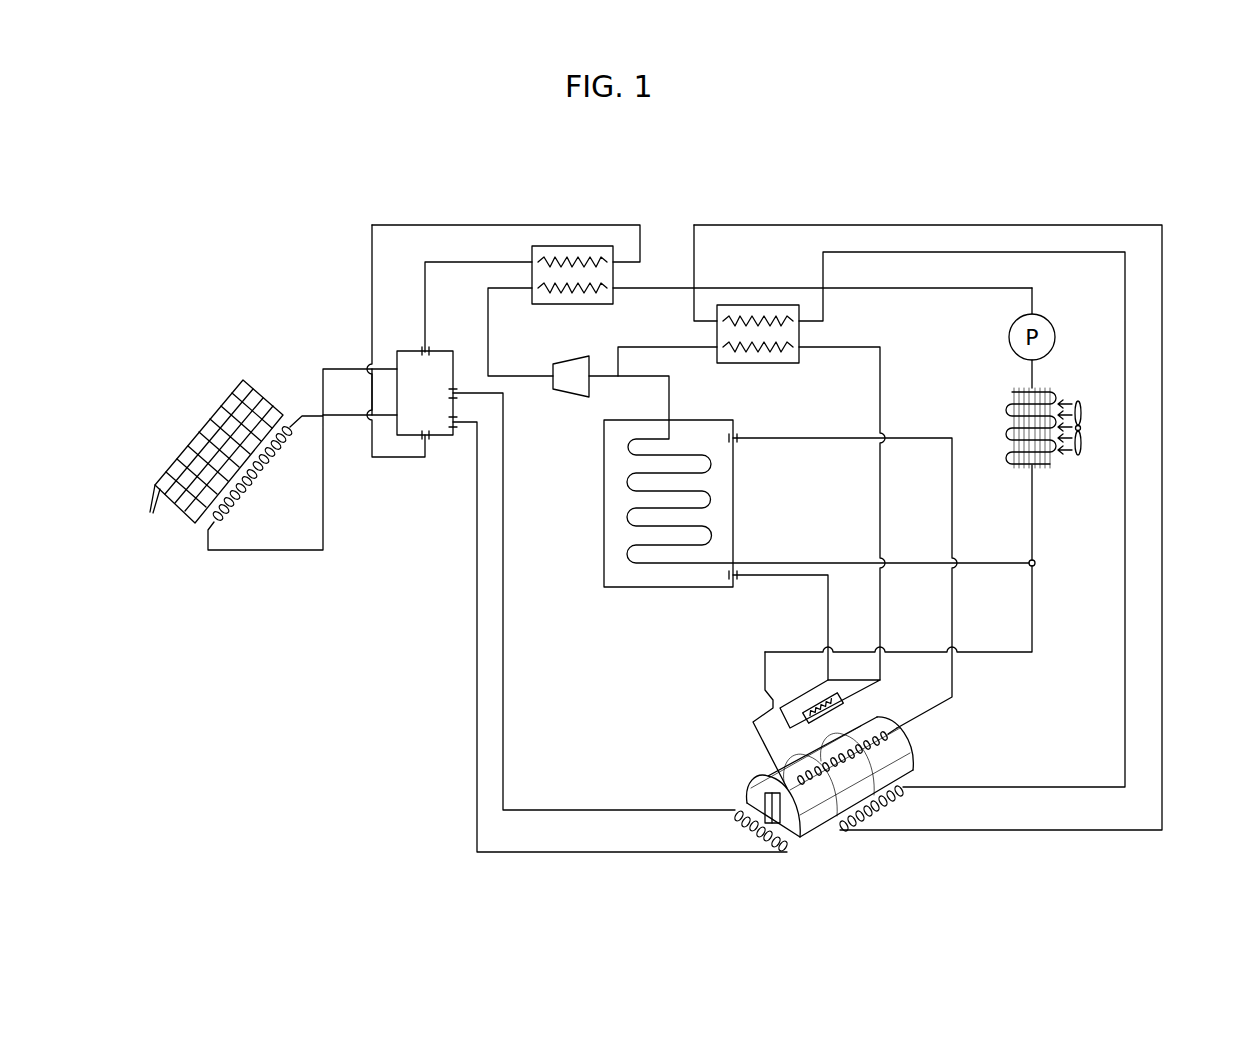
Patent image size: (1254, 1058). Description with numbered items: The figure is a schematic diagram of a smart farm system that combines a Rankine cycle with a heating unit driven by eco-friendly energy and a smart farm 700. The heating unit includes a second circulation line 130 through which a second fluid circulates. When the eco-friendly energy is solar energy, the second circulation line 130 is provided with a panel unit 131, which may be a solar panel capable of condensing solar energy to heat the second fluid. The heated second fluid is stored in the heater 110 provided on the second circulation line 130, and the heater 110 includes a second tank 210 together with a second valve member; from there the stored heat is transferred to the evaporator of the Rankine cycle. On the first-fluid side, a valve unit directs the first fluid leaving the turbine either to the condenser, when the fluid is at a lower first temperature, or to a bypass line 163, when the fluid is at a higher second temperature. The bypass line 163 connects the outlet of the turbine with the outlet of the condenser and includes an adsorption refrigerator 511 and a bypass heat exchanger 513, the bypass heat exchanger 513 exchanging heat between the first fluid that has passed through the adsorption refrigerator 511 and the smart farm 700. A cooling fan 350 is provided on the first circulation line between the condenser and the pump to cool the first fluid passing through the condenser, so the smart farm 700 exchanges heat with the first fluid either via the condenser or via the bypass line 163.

The heater 110 is at (557, 290).
The second circulation line 130 is at (345, 413).
The panel unit 131 is at (208, 430).
The bypass line 163 is at (673, 347).
The second tank 210 is at (405, 352).
The cooling fan 350 is at (1012, 393).
The adsorption refrigerator 511 is at (772, 365).
The bypass heat exchanger 513 is at (872, 818).
The smart farm 700 is at (770, 778).